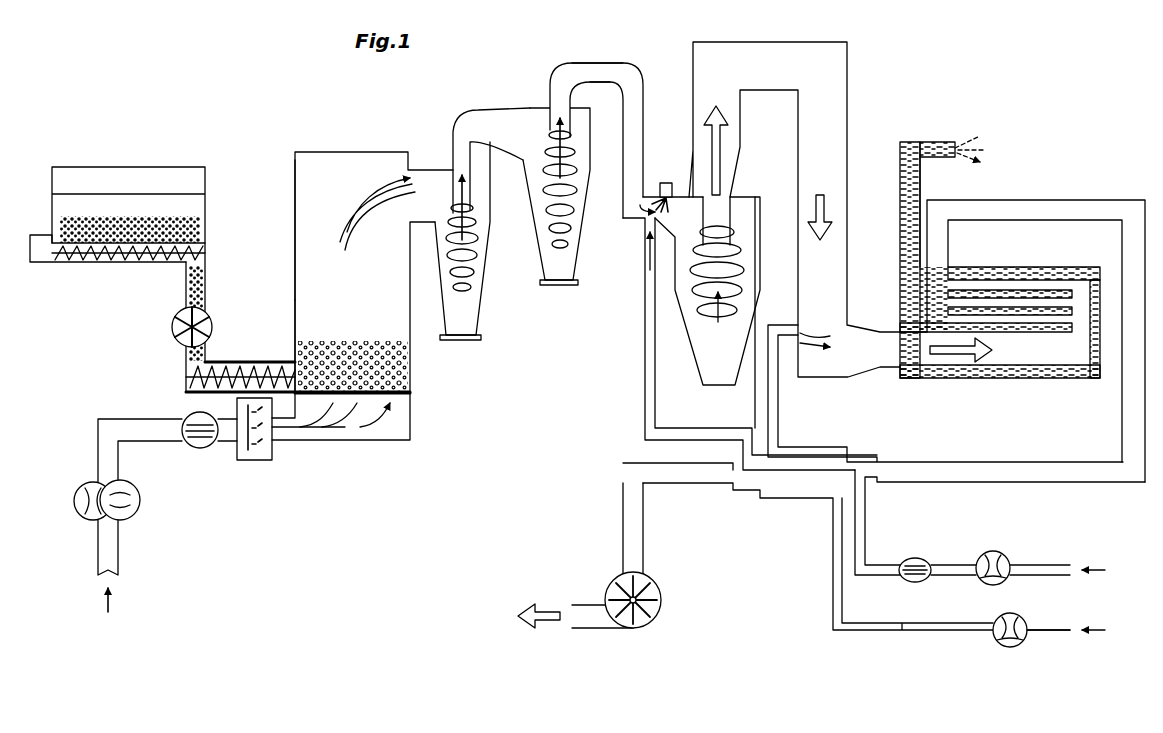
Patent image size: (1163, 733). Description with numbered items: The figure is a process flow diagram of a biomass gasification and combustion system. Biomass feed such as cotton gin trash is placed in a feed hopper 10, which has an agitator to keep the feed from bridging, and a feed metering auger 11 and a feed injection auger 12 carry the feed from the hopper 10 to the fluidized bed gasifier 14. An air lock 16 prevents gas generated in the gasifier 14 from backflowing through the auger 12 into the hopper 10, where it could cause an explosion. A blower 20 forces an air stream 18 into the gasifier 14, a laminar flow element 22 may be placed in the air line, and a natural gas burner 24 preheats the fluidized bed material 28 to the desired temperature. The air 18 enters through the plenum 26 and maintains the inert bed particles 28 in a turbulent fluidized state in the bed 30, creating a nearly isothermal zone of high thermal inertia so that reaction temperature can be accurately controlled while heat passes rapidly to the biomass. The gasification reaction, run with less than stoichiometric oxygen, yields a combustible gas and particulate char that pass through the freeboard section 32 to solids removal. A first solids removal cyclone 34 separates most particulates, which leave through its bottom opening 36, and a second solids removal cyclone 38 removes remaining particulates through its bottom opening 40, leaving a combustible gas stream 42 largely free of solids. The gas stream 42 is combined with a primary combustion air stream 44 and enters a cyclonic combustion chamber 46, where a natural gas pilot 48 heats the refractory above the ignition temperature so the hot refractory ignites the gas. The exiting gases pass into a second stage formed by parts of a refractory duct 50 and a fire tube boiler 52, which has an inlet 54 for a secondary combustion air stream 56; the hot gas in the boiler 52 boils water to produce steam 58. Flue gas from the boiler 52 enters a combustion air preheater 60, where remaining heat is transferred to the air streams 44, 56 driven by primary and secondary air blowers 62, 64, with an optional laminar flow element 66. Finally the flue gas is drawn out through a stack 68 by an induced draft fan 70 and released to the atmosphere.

The feed hopper 10 is at (170, 182).
The feed metering auger 11 is at (118, 263).
The feed injection auger 12 is at (240, 372).
The fluidized bed gasifier 14 is at (345, 152).
The air lock 16 is at (176, 338).
The air stream 18 is at (356, 416).
The blower 20 is at (138, 522).
The laminar flow element 22 is at (200, 450).
The natural gas burner 24 is at (258, 454).
The plenum 26 is at (392, 421).
The inert bed particles 28 is at (400, 368).
The bed 30 is at (290, 322).
The freeboard section 32 is at (292, 186).
The first solids removal cyclone 34 is at (438, 170).
The bottom opening 36 is at (468, 344).
The second solids removal cyclone 38 is at (541, 107).
The bottom opening 40 is at (560, 284).
The combustible gas stream 42 is at (615, 63).
The primary combustion air stream 44 is at (644, 351).
The cyclonic combustion chamber 46 is at (685, 185).
The natural gas pilot 48 is at (663, 183).
The refractory duct 50 is at (852, 95).
The fire tube boiler 52 is at (1036, 371).
The inlet 54 is at (786, 340).
The secondary combustion air stream 56 is at (772, 399).
The steam 58 is at (935, 142).
The combustion air preheater 60 is at (803, 498).
The primary air blower 62 is at (990, 552).
The secondary air blower 64 is at (994, 641).
The laminar flow element 66 is at (913, 558).
The stack 68 is at (583, 604).
The induced draft fan 70 is at (641, 618).